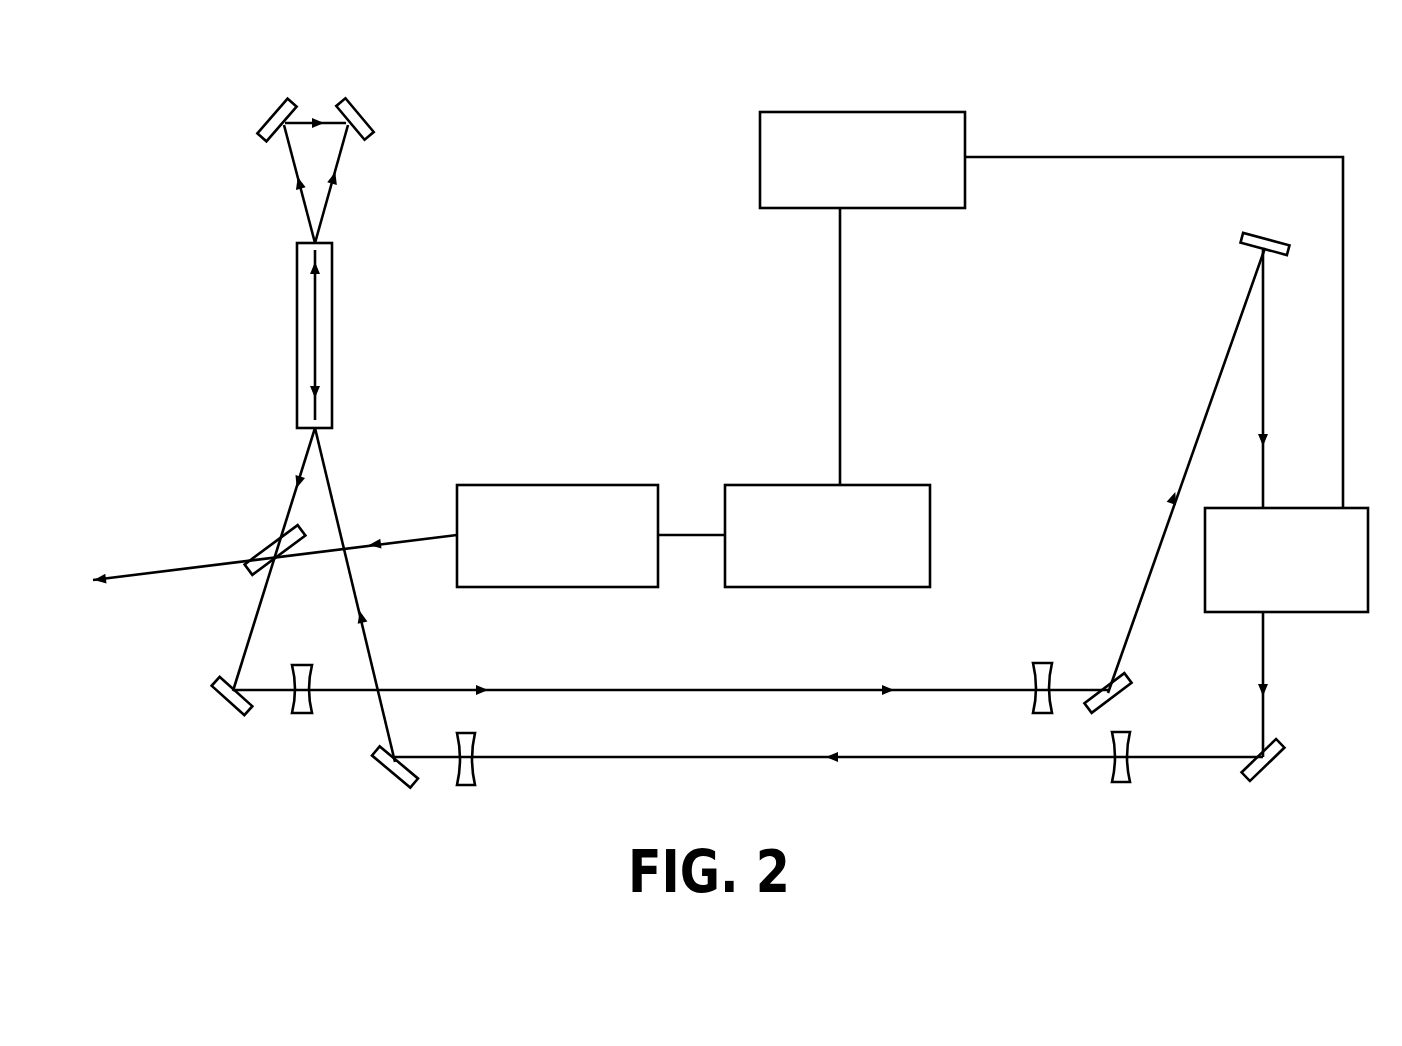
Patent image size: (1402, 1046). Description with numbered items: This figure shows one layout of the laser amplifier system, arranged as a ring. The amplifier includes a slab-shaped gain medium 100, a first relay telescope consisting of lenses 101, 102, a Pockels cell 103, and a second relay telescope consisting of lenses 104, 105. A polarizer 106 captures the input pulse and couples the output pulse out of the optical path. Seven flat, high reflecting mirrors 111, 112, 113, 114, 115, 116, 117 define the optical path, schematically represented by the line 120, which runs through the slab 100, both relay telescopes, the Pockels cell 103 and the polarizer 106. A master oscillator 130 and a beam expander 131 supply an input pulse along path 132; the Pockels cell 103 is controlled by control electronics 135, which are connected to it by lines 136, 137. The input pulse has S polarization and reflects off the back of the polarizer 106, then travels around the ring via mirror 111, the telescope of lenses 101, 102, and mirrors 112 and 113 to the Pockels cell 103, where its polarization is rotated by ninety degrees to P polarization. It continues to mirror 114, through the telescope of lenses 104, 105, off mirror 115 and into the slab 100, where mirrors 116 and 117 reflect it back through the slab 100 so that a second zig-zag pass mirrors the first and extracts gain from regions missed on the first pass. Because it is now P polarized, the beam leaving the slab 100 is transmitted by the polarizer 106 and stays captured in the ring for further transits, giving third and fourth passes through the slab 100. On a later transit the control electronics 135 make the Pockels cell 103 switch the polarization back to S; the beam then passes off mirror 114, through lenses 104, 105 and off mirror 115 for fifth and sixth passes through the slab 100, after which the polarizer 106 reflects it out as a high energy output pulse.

The slab-shaped gain medium 100 is at (332, 328).
The lens 101 is at (298, 713).
The lens 102 is at (1043, 662).
The Pockels cell 103 is at (1322, 603).
The lens 104 is at (1118, 782).
The lens 105 is at (465, 785).
The polarizer 106 is at (267, 548).
The flat high reflecting mirror 111 is at (228, 705).
The flat high reflecting mirror 112 is at (1115, 695).
The flat high reflecting mirror 113 is at (1268, 237).
The flat high reflecting mirror 114 is at (1273, 758).
The flat high reflecting mirror 115 is at (387, 773).
The flat high reflecting mirror 116 is at (267, 120).
The flat high reflecting mirror 117 is at (370, 110).
The optical path 120 is at (897, 758).
The master oscillator 130 is at (865, 576).
The beam expander 131 is at (570, 576).
The input path 132 is at (405, 535).
The control electronics 135 is at (890, 203).
The control line 136 is at (1198, 157).
The control line 137 is at (840, 342).